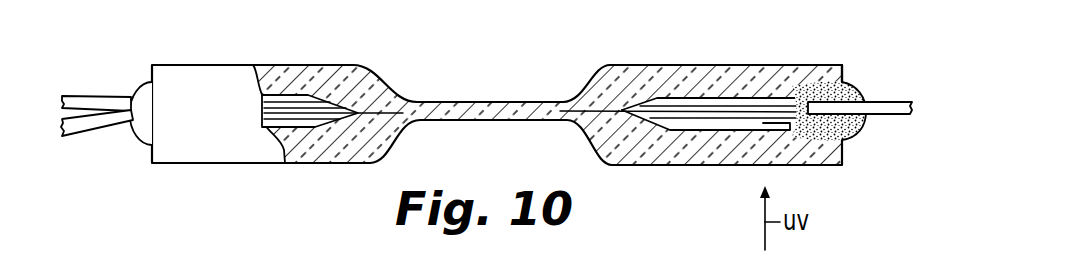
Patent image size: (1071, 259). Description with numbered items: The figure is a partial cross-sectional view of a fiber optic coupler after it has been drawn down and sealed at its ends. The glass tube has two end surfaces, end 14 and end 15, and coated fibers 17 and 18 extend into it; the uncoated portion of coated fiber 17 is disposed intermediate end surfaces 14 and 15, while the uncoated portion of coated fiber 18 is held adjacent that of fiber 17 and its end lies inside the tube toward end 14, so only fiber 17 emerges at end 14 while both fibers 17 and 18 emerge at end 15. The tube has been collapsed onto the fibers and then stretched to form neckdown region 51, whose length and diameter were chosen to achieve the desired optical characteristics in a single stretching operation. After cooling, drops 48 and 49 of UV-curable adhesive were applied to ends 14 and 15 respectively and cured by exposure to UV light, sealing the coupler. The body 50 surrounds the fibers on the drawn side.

The tube end 14 is at (843, 80).
The tube end 15 is at (152, 69).
The coated fiber 17 is at (87, 86).
The coated fiber 18 is at (83, 144).
The drop of adhesive 48 is at (863, 132).
The drop of adhesive 49 is at (140, 137).
The glass body 50 is at (651, 172).
The neckdown region 51 is at (482, 121).